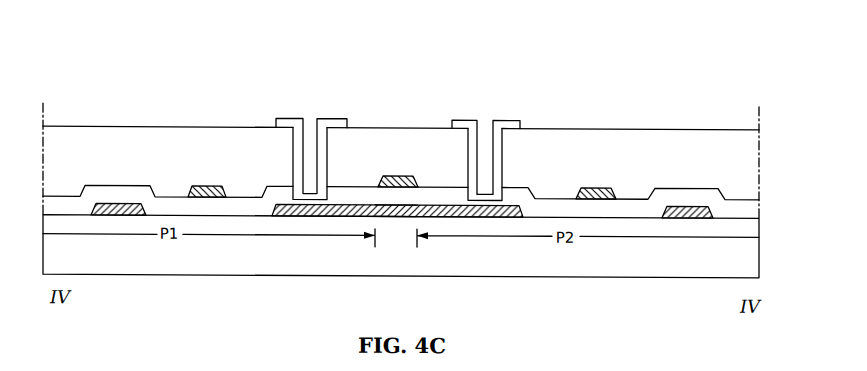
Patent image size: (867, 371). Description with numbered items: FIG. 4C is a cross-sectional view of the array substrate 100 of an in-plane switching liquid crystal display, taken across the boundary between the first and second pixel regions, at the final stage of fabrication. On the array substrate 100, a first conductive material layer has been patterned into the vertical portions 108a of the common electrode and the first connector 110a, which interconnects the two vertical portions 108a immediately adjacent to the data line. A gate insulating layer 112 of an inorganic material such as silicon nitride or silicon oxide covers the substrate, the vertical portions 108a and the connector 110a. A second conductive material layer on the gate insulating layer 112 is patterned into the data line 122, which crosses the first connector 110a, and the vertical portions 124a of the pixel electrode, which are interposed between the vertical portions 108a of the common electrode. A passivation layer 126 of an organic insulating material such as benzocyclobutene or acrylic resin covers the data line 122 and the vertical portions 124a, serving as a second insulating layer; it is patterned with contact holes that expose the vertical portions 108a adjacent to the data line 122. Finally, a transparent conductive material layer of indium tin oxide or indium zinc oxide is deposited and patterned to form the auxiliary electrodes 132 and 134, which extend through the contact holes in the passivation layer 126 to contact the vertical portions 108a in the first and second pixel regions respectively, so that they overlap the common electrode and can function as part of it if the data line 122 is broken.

The array substrate 100 is at (234, 265).
The vertical portions of the common electrode 108a is at (312, 215).
The first connector 110a is at (407, 215).
The gate insulating layer 112 is at (170, 196).
The data line 122 is at (408, 173).
The vertical portions of the pixel electrode 124a is at (209, 185).
The passivation layer 126 is at (81, 126).
The auxiliary electrode 132 is at (338, 116).
The auxiliary electrode 134 is at (463, 118).